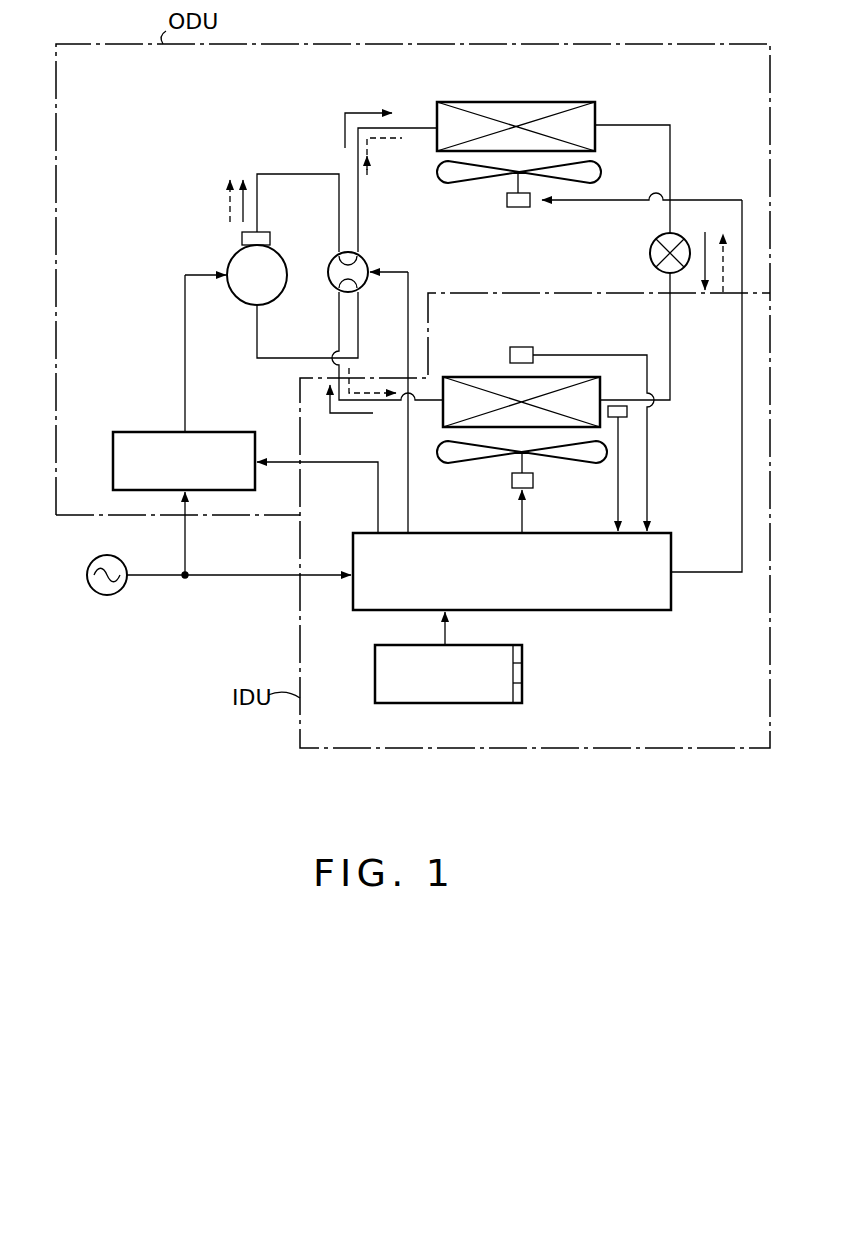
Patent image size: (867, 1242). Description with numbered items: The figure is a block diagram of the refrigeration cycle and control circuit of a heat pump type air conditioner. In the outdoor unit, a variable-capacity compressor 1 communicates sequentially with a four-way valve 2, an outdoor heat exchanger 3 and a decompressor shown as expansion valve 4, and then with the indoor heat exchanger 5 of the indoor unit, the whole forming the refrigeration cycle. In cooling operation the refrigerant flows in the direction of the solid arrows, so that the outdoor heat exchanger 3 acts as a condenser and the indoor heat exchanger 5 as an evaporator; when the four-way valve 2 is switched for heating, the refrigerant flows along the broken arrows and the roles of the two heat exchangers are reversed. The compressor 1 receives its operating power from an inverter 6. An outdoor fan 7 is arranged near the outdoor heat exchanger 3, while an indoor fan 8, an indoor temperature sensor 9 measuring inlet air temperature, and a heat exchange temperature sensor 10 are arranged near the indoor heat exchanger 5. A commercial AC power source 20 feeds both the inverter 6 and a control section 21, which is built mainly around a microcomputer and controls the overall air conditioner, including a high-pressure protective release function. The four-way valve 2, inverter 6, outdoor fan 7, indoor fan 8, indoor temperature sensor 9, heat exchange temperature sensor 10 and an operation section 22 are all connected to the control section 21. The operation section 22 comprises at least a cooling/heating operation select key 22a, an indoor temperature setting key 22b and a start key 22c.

The variable-capacity compressor 1 is at (231, 258).
The four-way valve 2 is at (364, 262).
The outdoor heat exchanger 3 is at (543, 102).
The expansion valve 4 is at (650, 253).
The indoor heat exchanger 5 is at (468, 377).
The inverter 6 is at (132, 432).
The outdoor fan 7 is at (490, 175).
The indoor fan 8 is at (487, 463).
The indoor temperature sensor 9 is at (520, 347).
The heat exchange temperature sensor 10 is at (627, 413).
The commercial AC power source 20 is at (125, 562).
The control section 21 is at (672, 598).
The operation section 22 is at (458, 705).
The cooling/heating operation select key 22a is at (522, 652).
The indoor temperature setting key 22b is at (522, 672).
The start key 22c is at (522, 692).